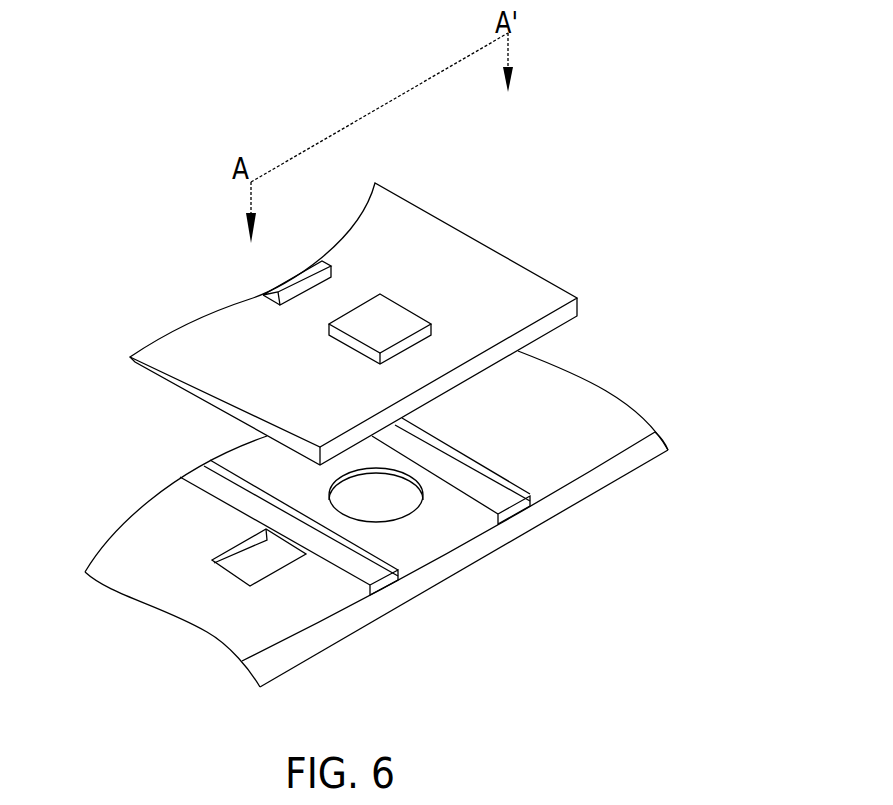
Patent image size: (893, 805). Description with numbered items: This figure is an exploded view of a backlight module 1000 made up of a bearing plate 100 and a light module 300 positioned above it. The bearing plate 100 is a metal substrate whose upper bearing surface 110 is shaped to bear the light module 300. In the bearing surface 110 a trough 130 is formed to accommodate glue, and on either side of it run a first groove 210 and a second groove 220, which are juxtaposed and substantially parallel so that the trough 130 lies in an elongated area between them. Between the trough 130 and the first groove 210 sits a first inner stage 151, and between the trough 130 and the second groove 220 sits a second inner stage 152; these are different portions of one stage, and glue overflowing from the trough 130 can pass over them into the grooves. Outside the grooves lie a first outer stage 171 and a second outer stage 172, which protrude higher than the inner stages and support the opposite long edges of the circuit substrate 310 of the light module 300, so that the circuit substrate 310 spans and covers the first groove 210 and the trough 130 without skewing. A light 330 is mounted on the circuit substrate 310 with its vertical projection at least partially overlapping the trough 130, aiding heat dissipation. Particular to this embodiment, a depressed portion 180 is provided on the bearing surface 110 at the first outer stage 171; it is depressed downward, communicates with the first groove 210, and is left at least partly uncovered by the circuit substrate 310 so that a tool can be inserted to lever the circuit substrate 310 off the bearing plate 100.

The backlight module 1000 is at (112, 155).
The bearing plate 100 is at (623, 455).
The bearing surface 110 is at (612, 423).
The trough 130 is at (381, 496).
The first inner stage 151 is at (333, 518).
The second inner stage 152 is at (417, 474).
The first outer stage 171 is at (290, 602).
The second outer stage 172 is at (533, 450).
The depressed portion 180 is at (268, 550).
The first groove 210 is at (227, 492).
The second groove 220 is at (445, 460).
The light module 300 is at (527, 190).
The circuit substrate 310 is at (453, 277).
The light 330 is at (380, 317).